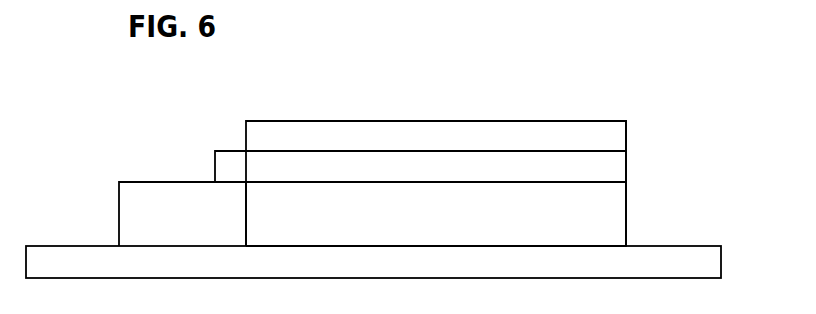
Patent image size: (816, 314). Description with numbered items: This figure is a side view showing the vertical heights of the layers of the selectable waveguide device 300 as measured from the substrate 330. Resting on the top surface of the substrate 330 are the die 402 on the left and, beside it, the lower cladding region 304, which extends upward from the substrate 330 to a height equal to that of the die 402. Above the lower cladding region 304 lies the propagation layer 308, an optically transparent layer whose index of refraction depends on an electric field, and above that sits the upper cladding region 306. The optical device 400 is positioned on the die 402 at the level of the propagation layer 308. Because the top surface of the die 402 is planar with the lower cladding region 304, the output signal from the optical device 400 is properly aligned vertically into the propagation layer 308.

The selectable waveguide device 300 is at (595, 105).
The lower cladding region 304 is at (626, 214).
The upper cladding region 306 is at (626, 135).
The propagation layer 308 is at (626, 168).
The substrate 330 is at (721, 262).
The optical device 400 is at (215, 168).
The die 402 is at (119, 204).